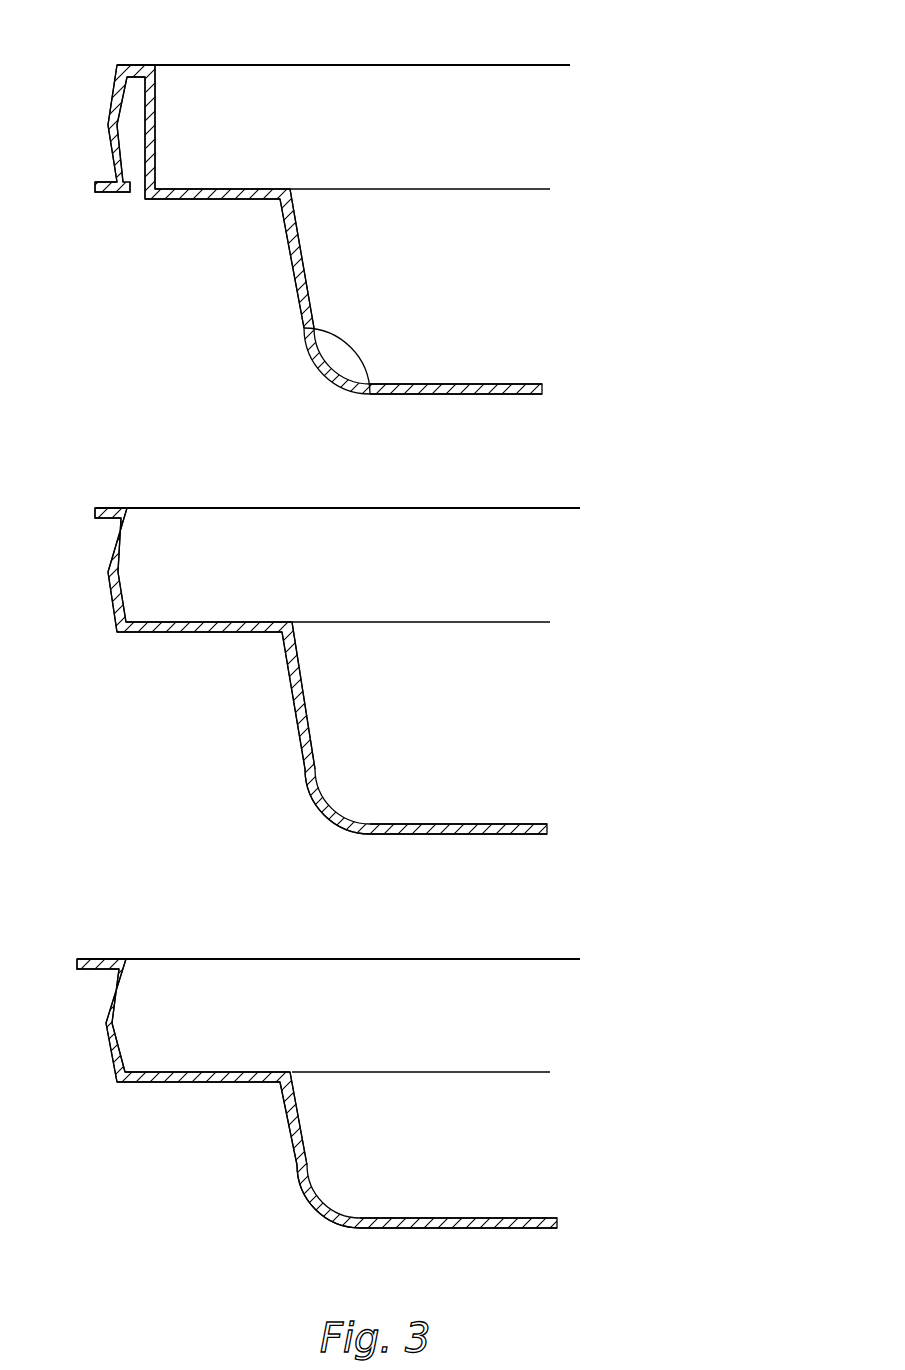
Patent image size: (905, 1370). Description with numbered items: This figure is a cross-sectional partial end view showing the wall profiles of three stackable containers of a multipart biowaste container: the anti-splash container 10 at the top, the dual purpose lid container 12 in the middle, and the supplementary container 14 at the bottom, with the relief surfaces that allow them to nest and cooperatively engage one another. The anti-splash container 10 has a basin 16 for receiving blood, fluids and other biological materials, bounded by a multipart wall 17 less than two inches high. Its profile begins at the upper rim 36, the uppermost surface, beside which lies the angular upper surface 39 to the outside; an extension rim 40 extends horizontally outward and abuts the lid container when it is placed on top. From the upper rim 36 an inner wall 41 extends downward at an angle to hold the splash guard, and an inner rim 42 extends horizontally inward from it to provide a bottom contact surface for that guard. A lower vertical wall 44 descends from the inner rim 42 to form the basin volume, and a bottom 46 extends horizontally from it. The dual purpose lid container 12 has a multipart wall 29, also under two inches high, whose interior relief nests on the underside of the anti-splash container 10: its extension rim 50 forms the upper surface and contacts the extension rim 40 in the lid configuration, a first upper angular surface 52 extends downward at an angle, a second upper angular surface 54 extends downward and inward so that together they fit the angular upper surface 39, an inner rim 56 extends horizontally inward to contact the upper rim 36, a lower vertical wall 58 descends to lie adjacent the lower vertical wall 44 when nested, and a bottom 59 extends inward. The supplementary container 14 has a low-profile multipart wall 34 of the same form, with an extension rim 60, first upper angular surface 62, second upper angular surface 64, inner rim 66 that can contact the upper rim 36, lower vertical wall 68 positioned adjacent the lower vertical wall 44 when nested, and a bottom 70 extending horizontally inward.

The anti-splash container 10 is at (373, 89).
The dual purpose lid container 12 is at (443, 613).
The supplementary container 14 is at (337, 1010).
The basin 16 is at (378, 305).
The multipart wall 17 is at (222, 367).
The multipart wall 29 is at (252, 710).
The multipart wall 34 is at (155, 1152).
The upper rim 36 is at (160, 66).
The angular upper surface 39 is at (110, 103).
The extension rim 40 is at (107, 180).
The inner wall 41 is at (156, 133).
The inner rim 42 is at (185, 199).
The lower vertical wall 44 is at (283, 240).
The bottom 46 is at (430, 394).
The extension rim 50 is at (112, 508).
The first upper angular surface 52 is at (120, 538).
The second upper angular surface 54 is at (130, 605).
The inner rim 56 is at (238, 622).
The lower vertical wall 58 is at (300, 695).
The bottom 59 is at (403, 824).
The extension rim 60 is at (104, 960).
The first upper angular surface 62 is at (120, 993).
The second upper angular surface 64 is at (122, 1053).
The inner rim 66 is at (222, 1072).
The lower vertical wall 68 is at (283, 1125).
The bottom 70 is at (401, 1218).